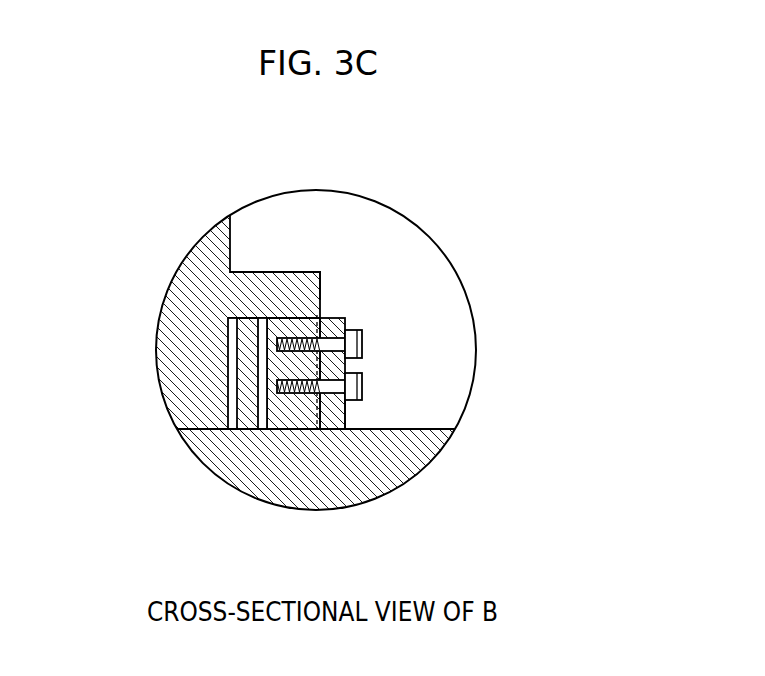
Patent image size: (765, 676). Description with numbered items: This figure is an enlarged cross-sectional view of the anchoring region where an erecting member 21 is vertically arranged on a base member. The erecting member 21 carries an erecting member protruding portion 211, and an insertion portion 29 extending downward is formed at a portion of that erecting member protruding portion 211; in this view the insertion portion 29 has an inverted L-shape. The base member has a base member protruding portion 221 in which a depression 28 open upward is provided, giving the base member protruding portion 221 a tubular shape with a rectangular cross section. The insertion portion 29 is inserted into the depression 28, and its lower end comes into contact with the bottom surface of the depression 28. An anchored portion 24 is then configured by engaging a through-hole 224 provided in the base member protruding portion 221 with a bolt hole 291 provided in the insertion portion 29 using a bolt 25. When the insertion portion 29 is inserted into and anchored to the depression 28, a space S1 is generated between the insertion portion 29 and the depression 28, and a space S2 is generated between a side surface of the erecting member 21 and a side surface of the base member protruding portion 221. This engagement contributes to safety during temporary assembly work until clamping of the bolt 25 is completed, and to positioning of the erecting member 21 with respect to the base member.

The erecting member 21 is at (197, 298).
The erecting member protruding portion 211 is at (322, 280).
The base member protruding portion 221 is at (345, 318).
The bolt 25 is at (362, 390).
The anchored portion 24 is at (345, 412).
The through-hole 224 is at (360, 402).
The bolt hole 291 is at (300, 377).
The insertion portion 29 is at (292, 432).
The depression 28 is at (318, 429).
The space S1 is at (262, 429).
The space S2 is at (232, 429).